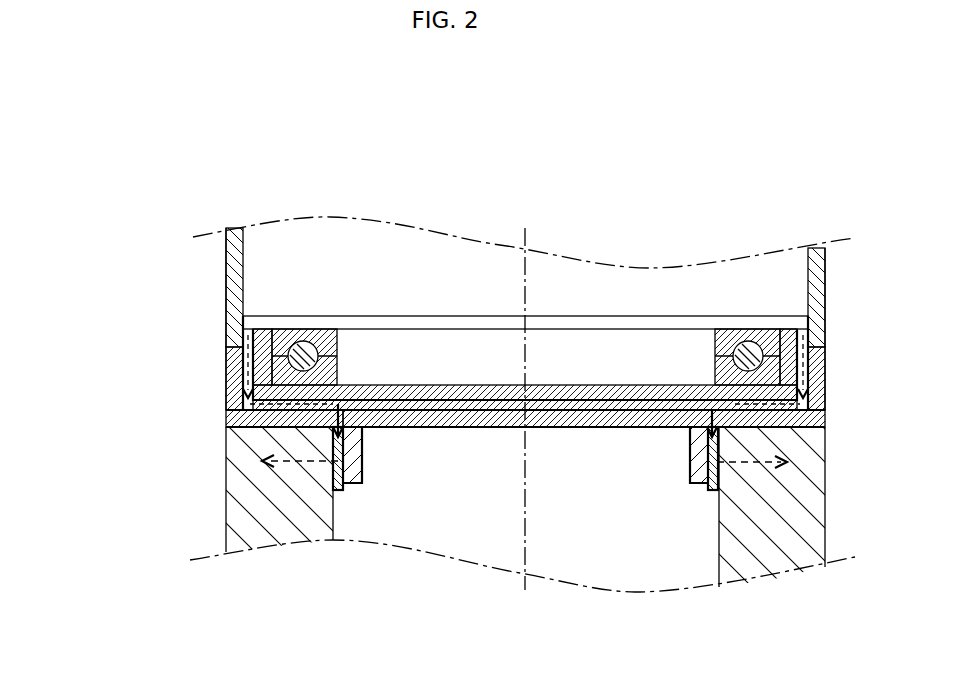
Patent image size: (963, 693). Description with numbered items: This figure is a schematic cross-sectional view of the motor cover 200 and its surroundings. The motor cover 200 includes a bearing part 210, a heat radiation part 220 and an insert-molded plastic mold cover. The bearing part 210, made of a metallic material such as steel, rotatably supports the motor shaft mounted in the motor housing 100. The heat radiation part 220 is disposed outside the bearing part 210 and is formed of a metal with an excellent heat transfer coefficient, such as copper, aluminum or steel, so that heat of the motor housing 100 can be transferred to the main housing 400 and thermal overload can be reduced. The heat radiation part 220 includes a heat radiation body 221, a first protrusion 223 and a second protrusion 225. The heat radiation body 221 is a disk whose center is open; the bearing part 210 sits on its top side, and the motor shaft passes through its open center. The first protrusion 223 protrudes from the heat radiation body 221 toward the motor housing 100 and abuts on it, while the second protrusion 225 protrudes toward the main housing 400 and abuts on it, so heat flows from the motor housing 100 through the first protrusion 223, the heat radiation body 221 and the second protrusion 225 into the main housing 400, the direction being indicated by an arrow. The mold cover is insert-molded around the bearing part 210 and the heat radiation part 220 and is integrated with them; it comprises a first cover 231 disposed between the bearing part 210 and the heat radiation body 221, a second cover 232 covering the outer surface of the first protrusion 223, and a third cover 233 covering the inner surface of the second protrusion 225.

The motor housing 100 is at (243, 250).
The motor cover 200 is at (92, 250).
The bearing part 210 is at (280, 330).
The heat radiation part 220 is at (431, 425).
The heat radiation body 221 is at (297, 431).
The first protrusion 223 is at (243, 385).
The second protrusion 225 is at (337, 482).
The first cover 231 is at (413, 388).
The second cover 232 is at (243, 352).
The third cover 233 is at (437, 417).
The main housing 400 is at (277, 525).